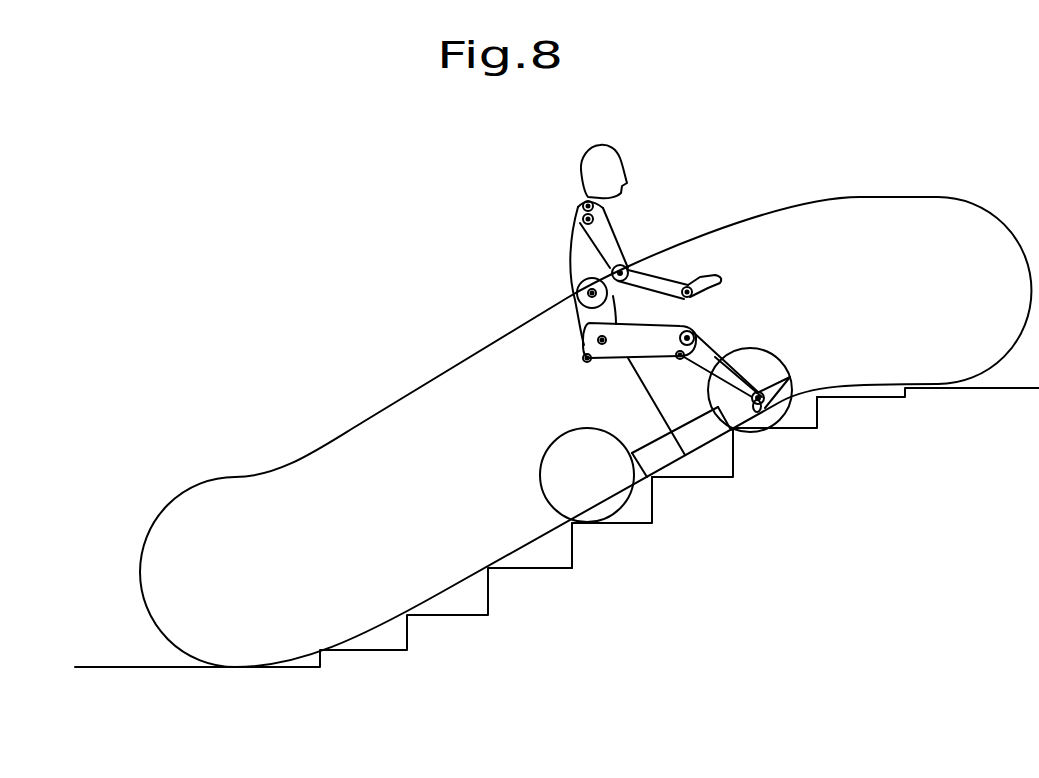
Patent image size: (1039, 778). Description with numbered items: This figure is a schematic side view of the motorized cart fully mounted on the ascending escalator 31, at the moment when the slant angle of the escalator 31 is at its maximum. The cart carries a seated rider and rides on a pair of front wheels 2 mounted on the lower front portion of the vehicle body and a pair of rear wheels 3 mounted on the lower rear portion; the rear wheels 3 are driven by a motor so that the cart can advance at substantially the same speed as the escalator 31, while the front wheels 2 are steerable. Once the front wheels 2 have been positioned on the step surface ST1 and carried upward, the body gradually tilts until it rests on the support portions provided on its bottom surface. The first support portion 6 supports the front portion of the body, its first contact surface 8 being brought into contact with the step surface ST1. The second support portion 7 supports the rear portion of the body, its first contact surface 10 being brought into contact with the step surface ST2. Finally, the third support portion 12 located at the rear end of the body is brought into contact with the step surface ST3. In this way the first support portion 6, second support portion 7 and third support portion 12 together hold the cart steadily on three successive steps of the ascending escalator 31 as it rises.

The front wheel 2 is at (753, 352).
The rear wheel 3 is at (563, 452).
The first support portion 6 is at (743, 437).
The second support portion 7 is at (664, 484).
The first contact surface 8 is at (731, 431).
The first contact surface 10 is at (645, 478).
The third support portion 12 is at (566, 565).
The ascending escalator 31 is at (600, 652).
The step surface ST1 is at (800, 437).
The step surface ST2 is at (717, 477).
The step surface ST3 is at (630, 523).